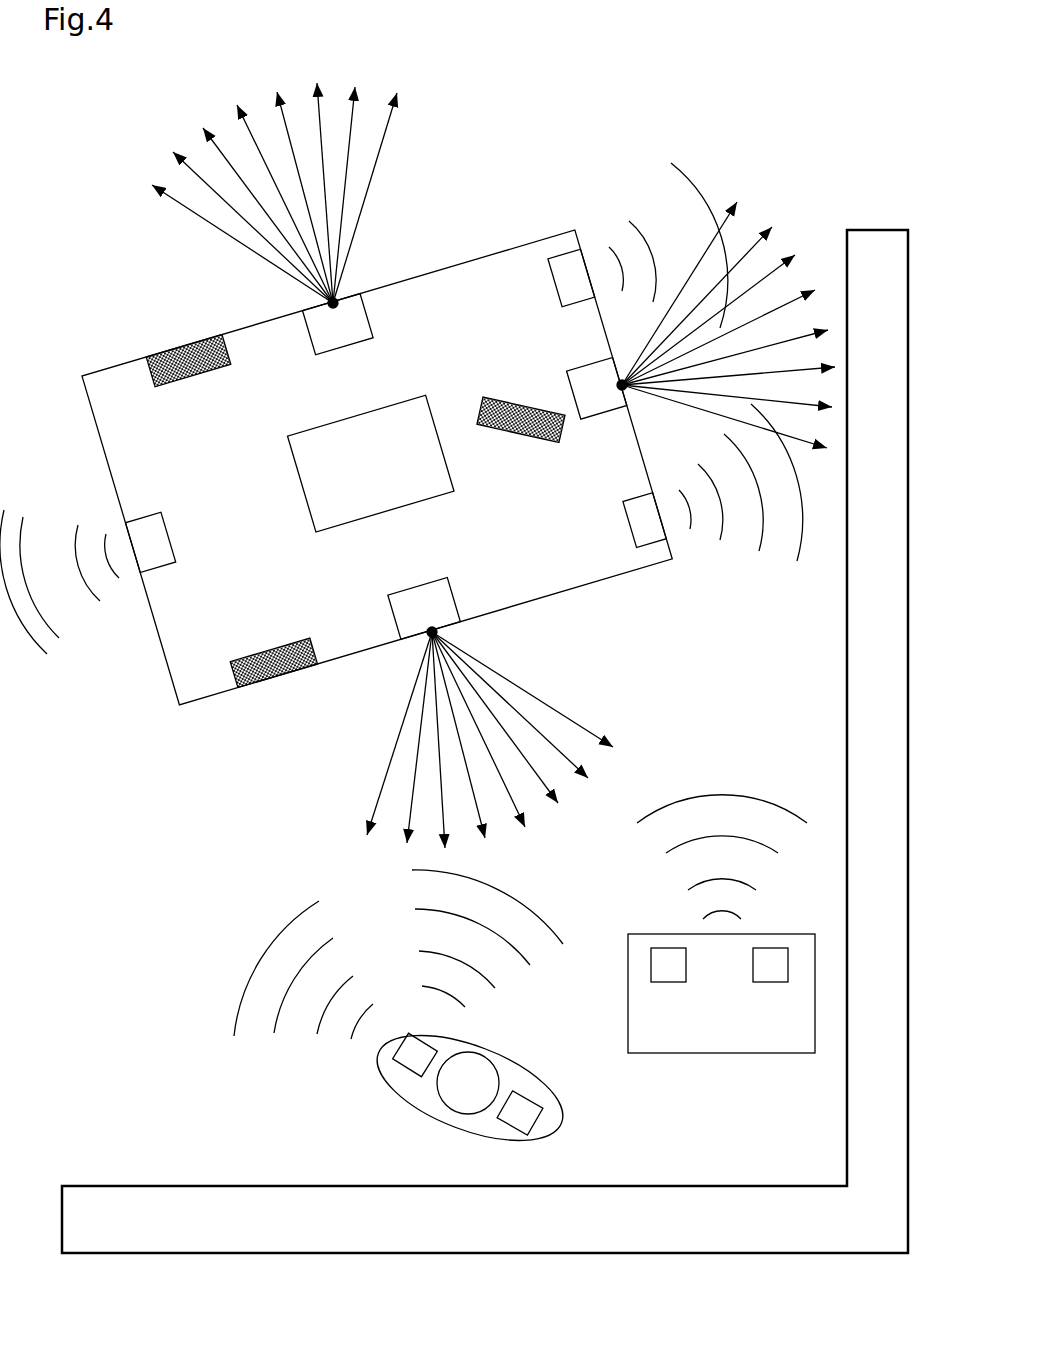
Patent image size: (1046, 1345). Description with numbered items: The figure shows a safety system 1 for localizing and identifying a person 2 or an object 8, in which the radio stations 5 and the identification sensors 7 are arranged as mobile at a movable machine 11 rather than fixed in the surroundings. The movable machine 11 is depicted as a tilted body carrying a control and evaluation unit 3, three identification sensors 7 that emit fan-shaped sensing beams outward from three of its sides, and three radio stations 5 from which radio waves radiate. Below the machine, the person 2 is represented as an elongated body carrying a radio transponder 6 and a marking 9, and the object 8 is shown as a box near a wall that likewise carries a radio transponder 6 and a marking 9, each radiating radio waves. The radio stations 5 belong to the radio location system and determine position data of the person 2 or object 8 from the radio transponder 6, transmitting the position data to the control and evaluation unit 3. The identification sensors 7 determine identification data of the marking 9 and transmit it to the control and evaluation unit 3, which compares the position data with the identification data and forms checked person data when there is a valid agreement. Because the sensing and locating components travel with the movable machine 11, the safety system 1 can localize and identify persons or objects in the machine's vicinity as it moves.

The safety system 1 is at (678, 80).
The person 2 is at (547, 1123).
The control and evaluation unit 3 is at (328, 448).
The radio station 5 is at (563, 267).
The radio transponder 6 is at (522, 1110).
The identification sensor 7 is at (358, 323).
The object 8 is at (743, 1047).
The marking 9 is at (402, 1060).
The movable machine 11 is at (445, 265).